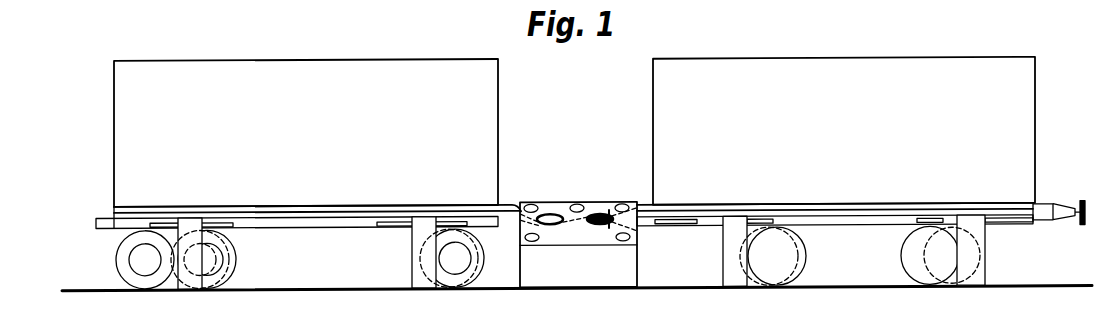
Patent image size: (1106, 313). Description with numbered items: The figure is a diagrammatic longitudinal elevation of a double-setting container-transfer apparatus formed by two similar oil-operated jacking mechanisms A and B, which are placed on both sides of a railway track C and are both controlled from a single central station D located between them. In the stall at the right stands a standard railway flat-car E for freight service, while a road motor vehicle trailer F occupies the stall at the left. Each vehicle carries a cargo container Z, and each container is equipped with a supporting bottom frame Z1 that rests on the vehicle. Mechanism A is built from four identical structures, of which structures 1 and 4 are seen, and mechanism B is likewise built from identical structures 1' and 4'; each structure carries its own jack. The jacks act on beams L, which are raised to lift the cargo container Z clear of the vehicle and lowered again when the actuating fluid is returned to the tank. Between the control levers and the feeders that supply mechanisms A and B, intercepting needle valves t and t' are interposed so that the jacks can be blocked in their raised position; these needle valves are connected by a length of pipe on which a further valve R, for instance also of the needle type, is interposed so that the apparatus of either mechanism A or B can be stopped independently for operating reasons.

The cargo container Z is at (316, 137).
The supporting bottom frame Z1 is at (473, 204).
The jacking mechanism A is at (890, 260).
The jacking mechanism B is at (331, 260).
The railway track C is at (98, 288).
The central station D is at (579, 284).
The railway flat-car E is at (648, 236).
The motor vehicle trailer F is at (513, 226).
The valve R is at (577, 207).
The needle valve t is at (623, 204).
The needle valve t' is at (525, 204).
The structure 1 is at (747, 251).
The structure 1' is at (407, 252).
The structure 4 is at (965, 250).
The structure 4' is at (195, 259).
The beam L is at (363, 230).